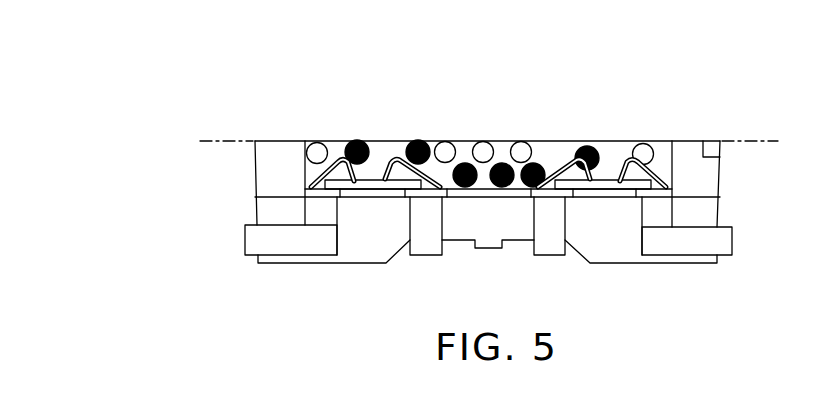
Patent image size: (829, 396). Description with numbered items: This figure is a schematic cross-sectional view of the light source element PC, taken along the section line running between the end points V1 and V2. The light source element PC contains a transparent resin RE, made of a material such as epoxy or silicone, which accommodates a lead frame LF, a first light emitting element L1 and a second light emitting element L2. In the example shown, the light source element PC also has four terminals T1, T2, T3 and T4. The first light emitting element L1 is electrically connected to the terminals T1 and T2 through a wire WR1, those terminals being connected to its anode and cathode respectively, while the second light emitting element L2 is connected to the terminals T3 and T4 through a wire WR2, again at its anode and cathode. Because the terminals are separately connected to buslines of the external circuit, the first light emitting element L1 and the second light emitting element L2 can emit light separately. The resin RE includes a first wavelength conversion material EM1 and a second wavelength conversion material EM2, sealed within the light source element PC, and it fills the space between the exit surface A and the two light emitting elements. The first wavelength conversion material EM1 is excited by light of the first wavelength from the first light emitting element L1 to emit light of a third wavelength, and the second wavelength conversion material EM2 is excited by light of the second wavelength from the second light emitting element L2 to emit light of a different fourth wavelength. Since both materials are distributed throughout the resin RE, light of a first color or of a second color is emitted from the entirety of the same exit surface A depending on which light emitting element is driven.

The line V1-V2 end point V1 is at (213, 141).
The line V1-V2 end point V2 is at (764, 141).
The light source element PC is at (712, 64).
The terminal T1 is at (295, 245).
The terminal T2 is at (427, 245).
The terminal T3 is at (552, 245).
The terminal T4 is at (694, 245).
The lead frame LF is at (488, 193).
The first light emitting element L1 is at (376, 168).
The second light emitting element L2 is at (605, 168).
The first wavelength conversion material EM1 is at (313, 143).
The second wavelength conversion material EM2 is at (359, 141).
The wire WR1 is at (304, 178).
The wire WR2 is at (569, 158).
The transparent resin RE is at (549, 157).
The exit surface A is at (476, 132).